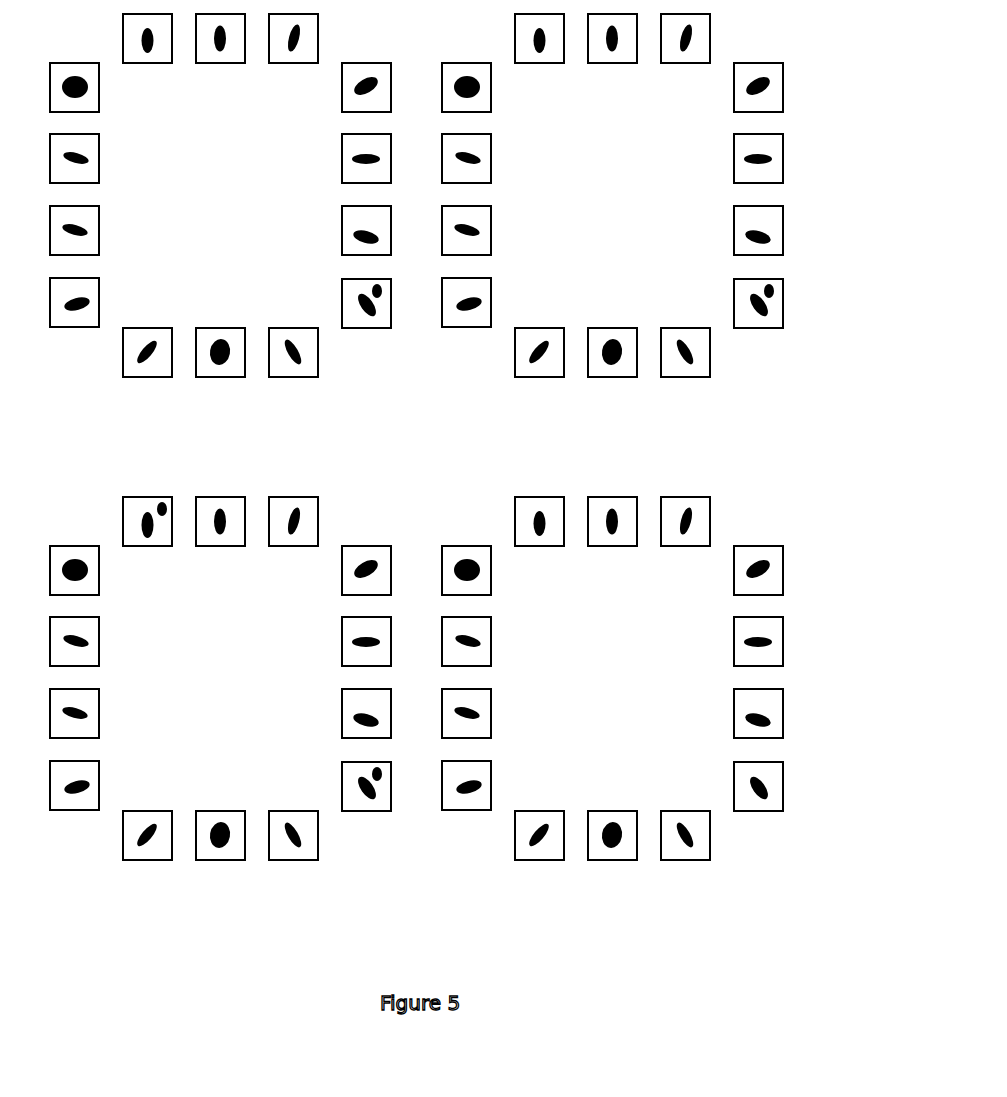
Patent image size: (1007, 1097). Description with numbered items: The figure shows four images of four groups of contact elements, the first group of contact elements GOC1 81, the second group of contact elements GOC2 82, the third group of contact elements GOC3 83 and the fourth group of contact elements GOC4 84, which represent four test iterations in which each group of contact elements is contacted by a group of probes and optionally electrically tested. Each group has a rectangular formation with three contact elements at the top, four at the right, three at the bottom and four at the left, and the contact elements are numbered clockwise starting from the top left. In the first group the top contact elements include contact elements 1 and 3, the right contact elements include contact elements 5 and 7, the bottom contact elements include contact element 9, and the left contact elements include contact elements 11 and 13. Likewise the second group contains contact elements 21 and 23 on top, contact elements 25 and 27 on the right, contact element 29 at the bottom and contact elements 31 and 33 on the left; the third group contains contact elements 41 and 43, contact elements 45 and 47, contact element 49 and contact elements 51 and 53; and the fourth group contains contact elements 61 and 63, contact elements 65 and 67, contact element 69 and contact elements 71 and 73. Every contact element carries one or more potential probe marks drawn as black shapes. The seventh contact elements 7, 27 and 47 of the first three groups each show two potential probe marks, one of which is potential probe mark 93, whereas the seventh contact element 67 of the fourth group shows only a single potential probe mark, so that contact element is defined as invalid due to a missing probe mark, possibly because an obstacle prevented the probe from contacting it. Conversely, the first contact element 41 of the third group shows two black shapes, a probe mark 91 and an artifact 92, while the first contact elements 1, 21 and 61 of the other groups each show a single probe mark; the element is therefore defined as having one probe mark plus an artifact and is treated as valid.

The contact element 1 is at (147, 63).
The contact element 3 is at (290, 63).
The contact element 5 is at (342, 160).
The contact element 7 is at (340, 305).
The contact element 9 is at (218, 328).
The contact element 11 is at (100, 302).
The contact element 13 is at (100, 159).
The contact element 21 is at (544, 60).
The contact element 23 is at (687, 60).
The contact element 25 is at (733, 155).
The contact element 27 is at (737, 294).
The contact element 29 is at (621, 336).
The contact element 31 is at (491, 292).
The contact element 33 is at (492, 158).
The contact element 41 is at (152, 542).
The contact element 43 is at (295, 542).
The contact element 45 is at (341, 637).
The contact element 47 is at (345, 777).
The contact element 49 is at (229, 819).
The contact element 51 is at (99, 775).
The contact element 53 is at (100, 641).
The contact element 61 is at (544, 542).
The contact element 63 is at (687, 542).
The contact element 65 is at (733, 637).
The contact element 67 is at (738, 777).
The contact element 69 is at (621, 819).
The contact element 71 is at (491, 775).
The contact element 73 is at (492, 641).
The first group of contact elements GOC1 81 is at (221, 411).
The second group of contact elements GOC2 82 is at (611, 411).
The third group of contact elements GOC3 83 is at (221, 894).
The fourth group of contact elements GOC4 84 is at (611, 894).
The probe mark 91 is at (94, 496).
The artifact 92 is at (203, 490).
The potential probe mark 93 is at (793, 299).